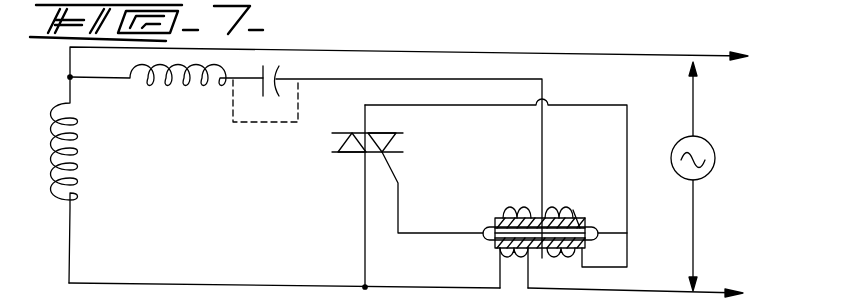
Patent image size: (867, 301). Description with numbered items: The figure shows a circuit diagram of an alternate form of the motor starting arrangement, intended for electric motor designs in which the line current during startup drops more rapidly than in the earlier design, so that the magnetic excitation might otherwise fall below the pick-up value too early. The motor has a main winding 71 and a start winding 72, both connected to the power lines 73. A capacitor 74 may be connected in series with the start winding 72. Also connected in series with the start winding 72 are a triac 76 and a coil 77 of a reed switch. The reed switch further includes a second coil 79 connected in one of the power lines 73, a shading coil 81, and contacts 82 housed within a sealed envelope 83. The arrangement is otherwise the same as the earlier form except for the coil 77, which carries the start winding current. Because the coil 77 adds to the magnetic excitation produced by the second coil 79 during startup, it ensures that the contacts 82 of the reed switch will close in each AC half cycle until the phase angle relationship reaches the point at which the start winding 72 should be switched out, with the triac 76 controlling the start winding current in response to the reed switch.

The main winding 71 is at (56, 128).
The start winding 72 is at (186, 95).
The power lines 73 is at (668, 58).
The capacitor 74 is at (263, 93).
The triac 76 is at (350, 160).
The coil 77 is at (575, 208).
The second coil 79 is at (509, 209).
The shading coil 81 is at (493, 247).
The contacts 82 is at (549, 209).
The sealed envelope 83 is at (485, 229).